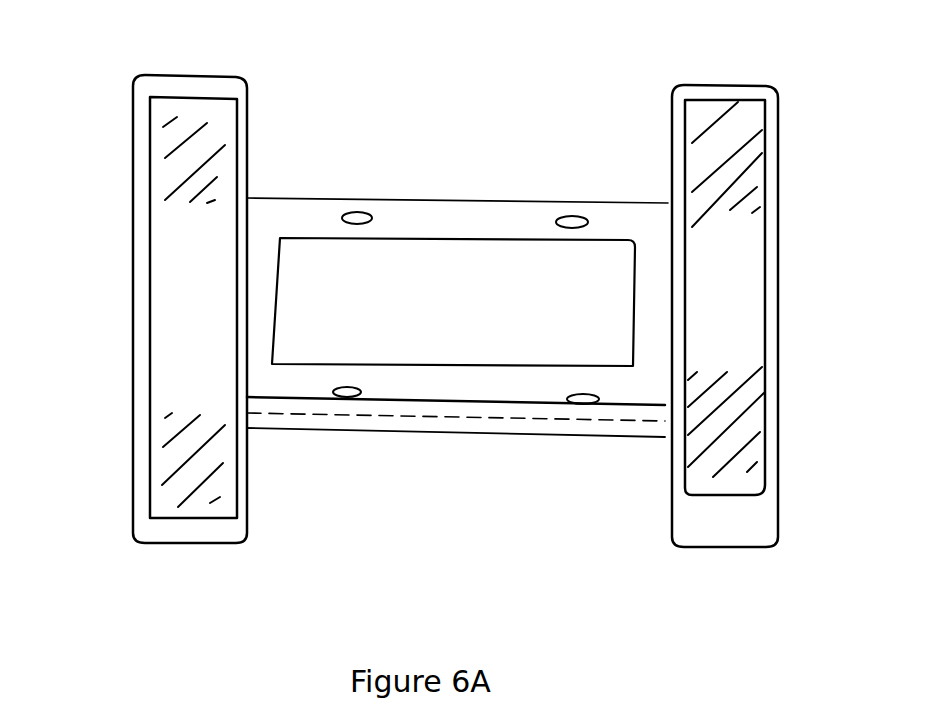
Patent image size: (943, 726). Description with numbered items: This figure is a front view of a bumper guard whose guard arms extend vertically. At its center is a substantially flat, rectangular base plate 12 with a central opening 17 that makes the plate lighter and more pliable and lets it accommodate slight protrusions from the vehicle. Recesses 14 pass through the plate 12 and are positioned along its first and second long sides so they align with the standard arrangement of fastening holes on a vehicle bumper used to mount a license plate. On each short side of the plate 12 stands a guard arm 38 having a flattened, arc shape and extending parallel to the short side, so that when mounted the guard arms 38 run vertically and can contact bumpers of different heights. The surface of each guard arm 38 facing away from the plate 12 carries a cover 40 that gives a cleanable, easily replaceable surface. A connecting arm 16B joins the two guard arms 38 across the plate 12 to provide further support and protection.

The base plate 12 is at (450, 215).
The recess 14 is at (355, 212).
The connecting arm 16B is at (430, 422).
The central opening 17 is at (290, 237).
The guard arm 38 is at (150, 92).
The cover 40 is at (182, 258).